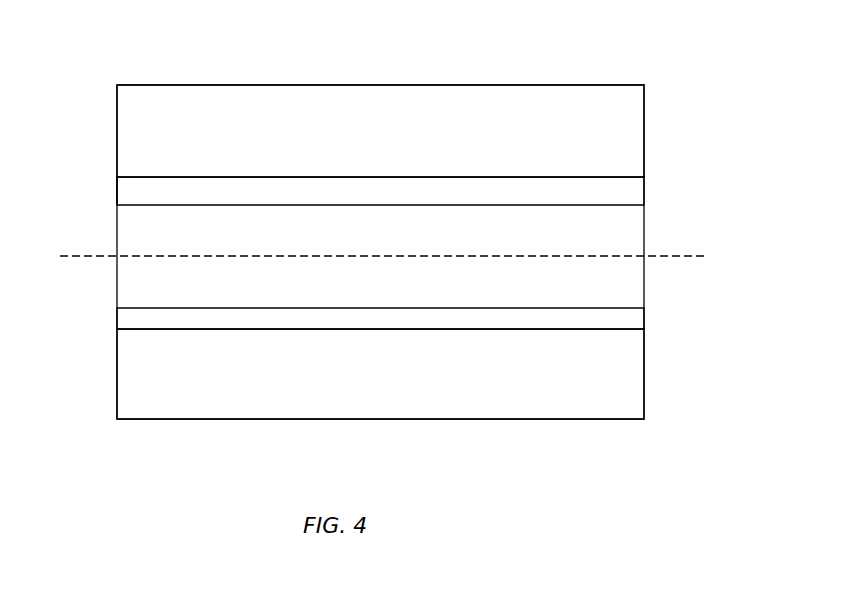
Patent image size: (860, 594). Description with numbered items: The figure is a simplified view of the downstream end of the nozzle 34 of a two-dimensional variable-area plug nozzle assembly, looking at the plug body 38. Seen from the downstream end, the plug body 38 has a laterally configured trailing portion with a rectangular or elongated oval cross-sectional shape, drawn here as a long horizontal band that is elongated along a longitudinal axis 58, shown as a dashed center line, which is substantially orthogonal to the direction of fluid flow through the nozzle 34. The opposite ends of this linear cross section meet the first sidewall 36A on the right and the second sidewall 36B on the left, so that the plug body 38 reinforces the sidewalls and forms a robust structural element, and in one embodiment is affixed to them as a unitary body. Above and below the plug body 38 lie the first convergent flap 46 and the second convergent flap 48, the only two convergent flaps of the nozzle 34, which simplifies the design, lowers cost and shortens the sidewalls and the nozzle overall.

The nozzle 34 is at (690, 142).
The first convergent flap 46 is at (532, 100).
The first sidewall 36A is at (644, 188).
The second sidewall 36B is at (117, 190).
The plug body 38 is at (130, 291).
The second convergent flap 48 is at (543, 400).
The longitudinal axis 58 is at (680, 258).